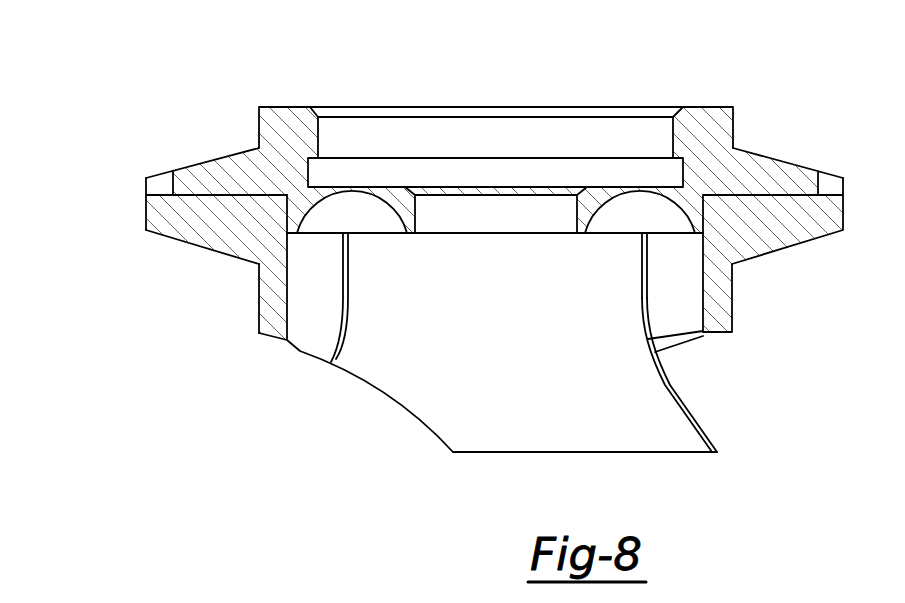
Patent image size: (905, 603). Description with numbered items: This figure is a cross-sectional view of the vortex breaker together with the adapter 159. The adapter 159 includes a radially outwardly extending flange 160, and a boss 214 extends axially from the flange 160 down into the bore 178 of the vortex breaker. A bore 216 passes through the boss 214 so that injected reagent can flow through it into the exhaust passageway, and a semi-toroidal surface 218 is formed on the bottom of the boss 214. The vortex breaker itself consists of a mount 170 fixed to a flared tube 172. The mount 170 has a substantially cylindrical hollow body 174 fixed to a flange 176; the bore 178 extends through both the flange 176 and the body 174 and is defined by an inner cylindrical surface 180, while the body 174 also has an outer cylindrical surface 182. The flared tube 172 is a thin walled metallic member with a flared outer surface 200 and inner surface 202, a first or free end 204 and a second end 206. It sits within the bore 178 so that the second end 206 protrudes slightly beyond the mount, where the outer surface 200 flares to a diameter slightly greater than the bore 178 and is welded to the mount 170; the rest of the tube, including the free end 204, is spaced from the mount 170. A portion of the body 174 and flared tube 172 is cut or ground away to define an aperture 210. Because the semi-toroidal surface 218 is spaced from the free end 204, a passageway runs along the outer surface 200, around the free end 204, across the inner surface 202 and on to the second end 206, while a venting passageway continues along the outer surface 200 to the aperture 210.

The adapter 159 is at (277, 120).
The flange 160 is at (770, 168).
The mount 170 is at (140, 203).
The flared tube 172 is at (223, 167).
The body 174 is at (268, 325).
The flange 176 is at (180, 231).
The bore 178 is at (317, 330).
The inner surface 180 is at (700, 300).
The outer surface 182 is at (260, 305).
The outer surface 200 is at (700, 428).
The inner surface 202 is at (677, 402).
The free end 204 is at (645, 230).
The second end 206 is at (727, 458).
The aperture 210 is at (322, 367).
The boss 214 is at (708, 230).
The bore 216 is at (415, 217).
The semi-toroidal surface 218 is at (600, 192).